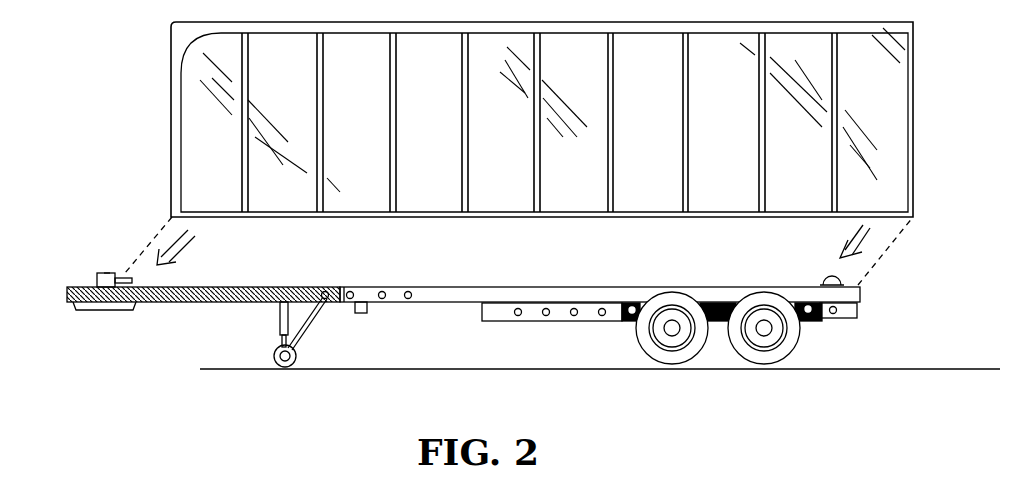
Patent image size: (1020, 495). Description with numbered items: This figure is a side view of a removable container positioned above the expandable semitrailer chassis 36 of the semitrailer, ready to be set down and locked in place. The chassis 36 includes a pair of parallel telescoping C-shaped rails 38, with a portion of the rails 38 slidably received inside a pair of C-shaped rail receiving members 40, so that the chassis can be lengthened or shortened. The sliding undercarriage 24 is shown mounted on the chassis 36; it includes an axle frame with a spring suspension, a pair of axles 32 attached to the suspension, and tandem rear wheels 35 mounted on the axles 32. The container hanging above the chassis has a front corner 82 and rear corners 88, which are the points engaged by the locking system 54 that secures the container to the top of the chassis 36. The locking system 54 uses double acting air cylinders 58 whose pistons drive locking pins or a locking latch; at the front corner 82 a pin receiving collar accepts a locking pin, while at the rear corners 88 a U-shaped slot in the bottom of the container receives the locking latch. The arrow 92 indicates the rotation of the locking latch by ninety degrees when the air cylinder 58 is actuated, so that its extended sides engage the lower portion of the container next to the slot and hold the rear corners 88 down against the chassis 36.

The front corner 82 is at (178, 195).
The rear corners 88 is at (895, 200).
The arrow 92 is at (190, 242).
The locking system 54 is at (86, 261).
The double acting air cylinder 58 is at (110, 272).
The expandable semitrailer chassis 36 is at (208, 316).
The telescoping C-shaped rails 38 is at (258, 306).
The C-shaped rail receiving members 40 is at (435, 302).
The sliding undercarriage 24 is at (623, 334).
The axles 32 is at (760, 338).
The tandem rear wheels 35 is at (780, 348).